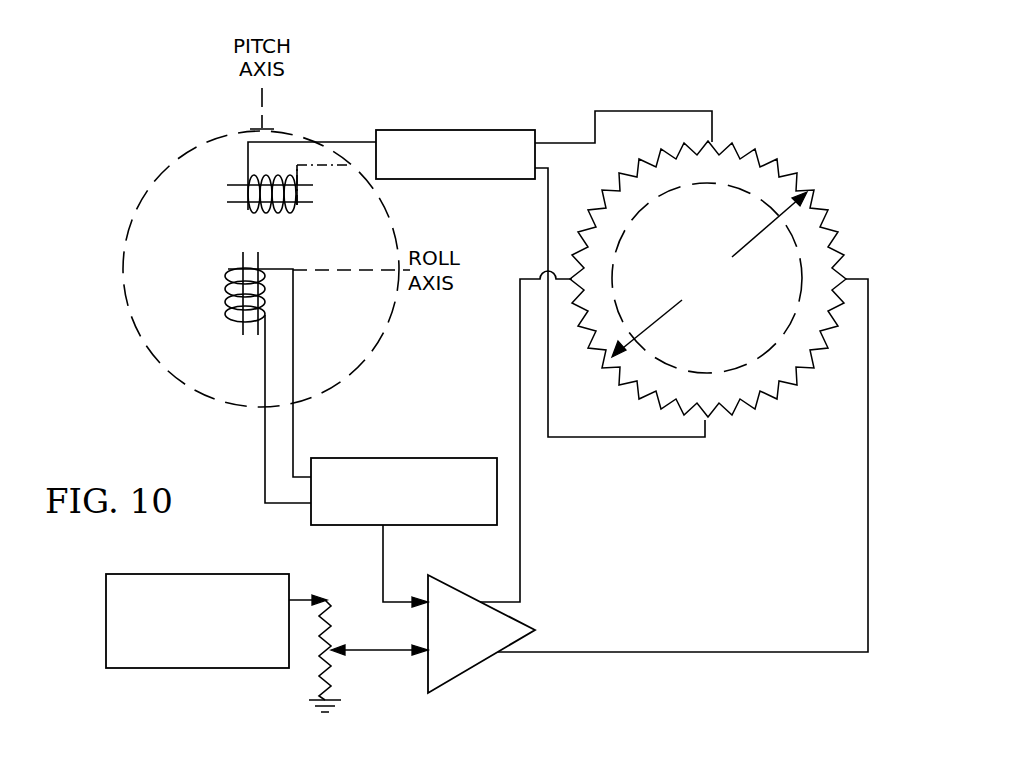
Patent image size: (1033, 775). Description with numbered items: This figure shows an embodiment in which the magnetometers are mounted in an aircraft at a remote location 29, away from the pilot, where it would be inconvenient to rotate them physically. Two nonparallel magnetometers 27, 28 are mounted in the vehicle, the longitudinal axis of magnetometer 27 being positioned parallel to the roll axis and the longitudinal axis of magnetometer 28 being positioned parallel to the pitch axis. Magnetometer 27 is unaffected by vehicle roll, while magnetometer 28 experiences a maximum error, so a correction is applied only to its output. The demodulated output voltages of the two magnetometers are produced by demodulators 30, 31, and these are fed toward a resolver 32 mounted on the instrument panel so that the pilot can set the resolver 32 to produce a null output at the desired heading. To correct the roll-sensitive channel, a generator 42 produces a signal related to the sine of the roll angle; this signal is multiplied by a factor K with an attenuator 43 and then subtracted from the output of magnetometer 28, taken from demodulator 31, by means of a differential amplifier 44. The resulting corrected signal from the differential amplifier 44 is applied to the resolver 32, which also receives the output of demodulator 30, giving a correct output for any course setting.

The magnetometer 27 is at (233, 203).
The magnetometer 28 is at (226, 296).
The remote location 29 is at (122, 262).
The demodulator 30 is at (458, 131).
The demodulator 31 is at (403, 458).
The resolver 32 is at (762, 160).
The generator 42 is at (190, 574).
The attenuator 43 is at (338, 607).
The differential amplifier 44 is at (524, 622).